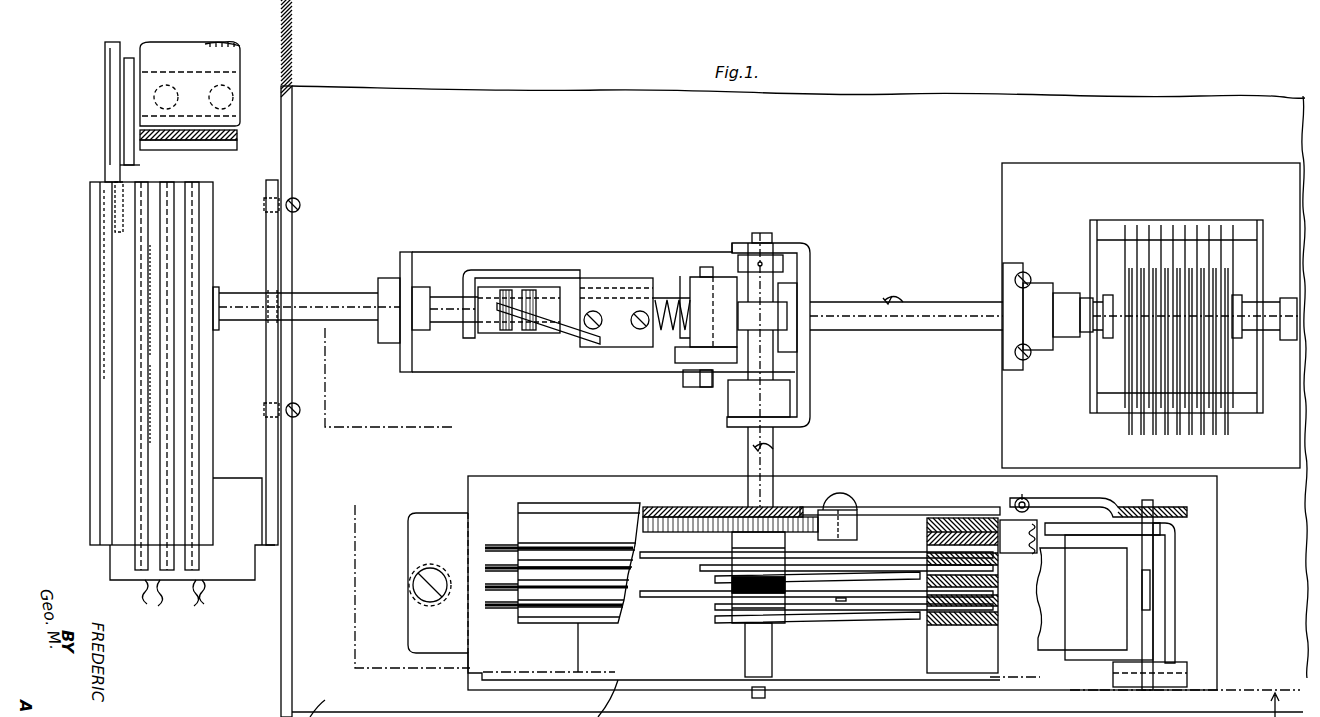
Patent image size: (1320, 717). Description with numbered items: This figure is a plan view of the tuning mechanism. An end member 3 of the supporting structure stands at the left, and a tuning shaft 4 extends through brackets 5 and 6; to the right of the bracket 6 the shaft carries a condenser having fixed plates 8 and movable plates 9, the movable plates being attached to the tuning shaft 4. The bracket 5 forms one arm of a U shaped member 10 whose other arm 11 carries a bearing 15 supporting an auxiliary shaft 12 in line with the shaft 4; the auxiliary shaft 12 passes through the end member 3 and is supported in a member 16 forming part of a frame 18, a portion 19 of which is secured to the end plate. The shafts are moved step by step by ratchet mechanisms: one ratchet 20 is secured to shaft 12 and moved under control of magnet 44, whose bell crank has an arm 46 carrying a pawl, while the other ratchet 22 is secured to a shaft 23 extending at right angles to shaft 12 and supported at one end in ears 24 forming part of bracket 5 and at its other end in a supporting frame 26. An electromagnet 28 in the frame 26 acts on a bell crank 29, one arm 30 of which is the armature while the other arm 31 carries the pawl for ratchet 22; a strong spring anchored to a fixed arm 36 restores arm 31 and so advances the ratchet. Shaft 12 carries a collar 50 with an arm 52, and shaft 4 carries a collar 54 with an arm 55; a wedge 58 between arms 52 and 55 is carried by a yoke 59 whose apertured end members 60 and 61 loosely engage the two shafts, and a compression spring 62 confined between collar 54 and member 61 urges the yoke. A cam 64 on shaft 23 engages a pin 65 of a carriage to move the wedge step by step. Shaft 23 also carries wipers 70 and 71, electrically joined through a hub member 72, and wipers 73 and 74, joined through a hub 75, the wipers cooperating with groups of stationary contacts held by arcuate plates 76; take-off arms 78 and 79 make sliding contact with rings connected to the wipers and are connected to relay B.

The end member 3 is at (281, 628).
The tuning shaft 4 is at (943, 305).
The bracket 5 is at (367, 320).
The bracket 6 is at (1048, 265).
The fixed plates 8 is at (1198, 225).
The movable plates 9 is at (1215, 435).
The U shaped member 10 is at (616, 246).
The arm 11 is at (405, 252).
The auxiliary shaft 12 is at (325, 300).
The bearing 15 is at (385, 278).
The member 16 is at (90, 443).
The frame 18 is at (233, 480).
The portion 19 is at (268, 262).
The ratchet 20 is at (105, 372).
The ratchet 22 is at (705, 513).
The shaft 23 is at (775, 235).
The ears 24 is at (740, 248).
The supporting frame 26 is at (1006, 565).
The electromagnet 28 is at (1098, 591).
The bell crank 29 is at (1155, 503).
The arm 30 is at (1165, 588).
The arm 31 is at (896, 506).
The fixed arm 36 is at (1100, 506).
The magnet 44 is at (237, 60).
The arm 46 is at (112, 122).
The collar 50 is at (490, 337).
The arm 52 is at (518, 300).
The collar 54 is at (543, 336).
The arm 55 is at (515, 335).
The wedge 58 is at (555, 292).
The yoke 59 is at (627, 275).
The end member 60 is at (466, 285).
The end member 61 is at (680, 340).
The compression spring 62 is at (680, 280).
The cam 64 is at (725, 380).
The pin 65 is at (702, 388).
The wiper 70 is at (900, 625).
The wiper 71 is at (660, 600).
The hub member 72 is at (716, 606).
The wiper 73 is at (862, 600).
The wiper 74 is at (660, 553).
The hub 75 is at (700, 568).
The arcuate plates 76 is at (525, 530).
The take-off arm 78 is at (840, 598).
The take-off arm 79 is at (850, 552).
The relay B is at (1030, 544).